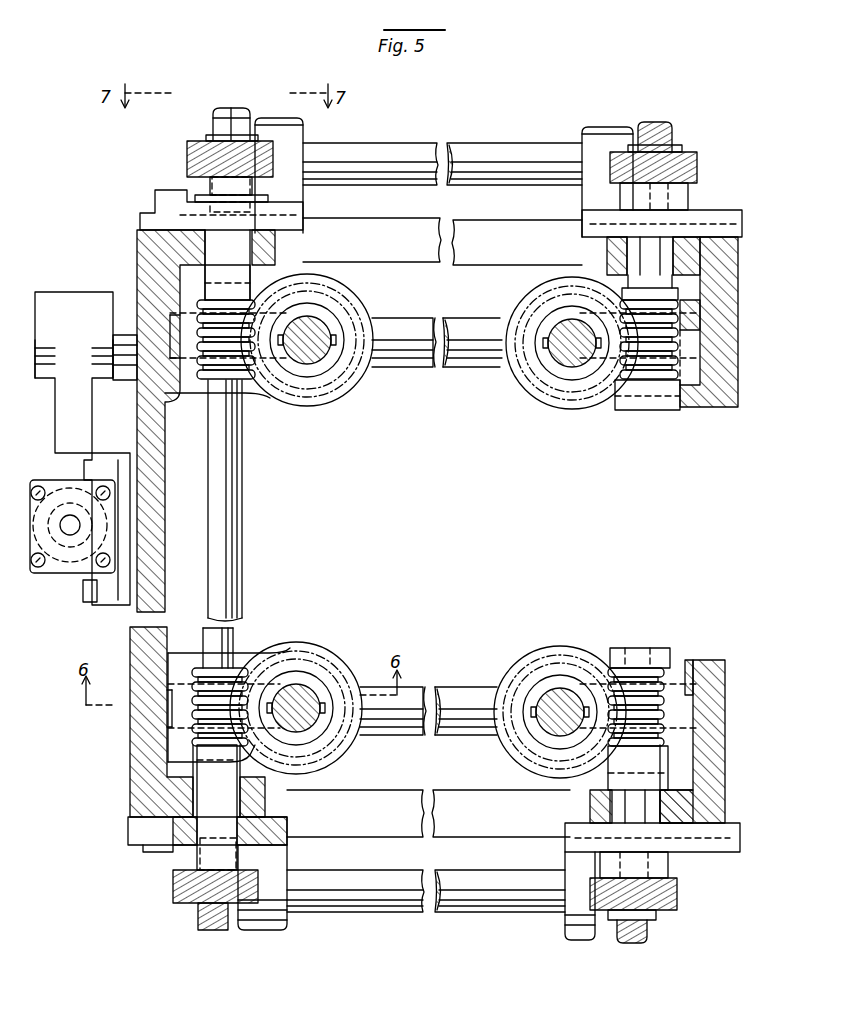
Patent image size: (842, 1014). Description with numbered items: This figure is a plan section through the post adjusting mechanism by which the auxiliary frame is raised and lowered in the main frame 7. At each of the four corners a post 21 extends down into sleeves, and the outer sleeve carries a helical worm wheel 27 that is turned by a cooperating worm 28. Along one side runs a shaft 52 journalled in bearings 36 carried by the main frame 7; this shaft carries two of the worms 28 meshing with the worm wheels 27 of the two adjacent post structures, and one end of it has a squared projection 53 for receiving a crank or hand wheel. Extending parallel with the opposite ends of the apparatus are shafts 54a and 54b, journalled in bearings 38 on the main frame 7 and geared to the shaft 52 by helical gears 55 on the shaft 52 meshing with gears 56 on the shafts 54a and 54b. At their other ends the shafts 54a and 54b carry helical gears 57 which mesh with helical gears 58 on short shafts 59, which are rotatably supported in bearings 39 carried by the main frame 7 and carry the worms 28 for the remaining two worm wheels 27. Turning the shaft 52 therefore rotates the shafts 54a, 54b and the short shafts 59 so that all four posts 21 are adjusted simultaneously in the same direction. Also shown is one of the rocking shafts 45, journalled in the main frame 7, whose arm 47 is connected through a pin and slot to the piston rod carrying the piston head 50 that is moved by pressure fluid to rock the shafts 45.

The main frame 7 is at (738, 292).
The post 21 is at (308, 362).
The worm wheel 27 is at (283, 398).
The worm 28 is at (232, 373).
The bearing 36 is at (268, 222).
The bearing 38 is at (297, 190).
The bearing 39 is at (693, 218).
The shaft 45 is at (470, 366).
The arm 47 is at (82, 432).
The piston head 50 is at (62, 574).
The shaft 52 is at (236, 490).
The squared projection 53 is at (214, 120).
The shaft 54a is at (498, 134).
The shaft 54b is at (388, 941).
The gear 55 is at (190, 153).
The gear 56 is at (212, 184).
The helical gear 57 is at (672, 130).
The helical gear 58 is at (697, 160).
The short shaft 59 is at (640, 252).